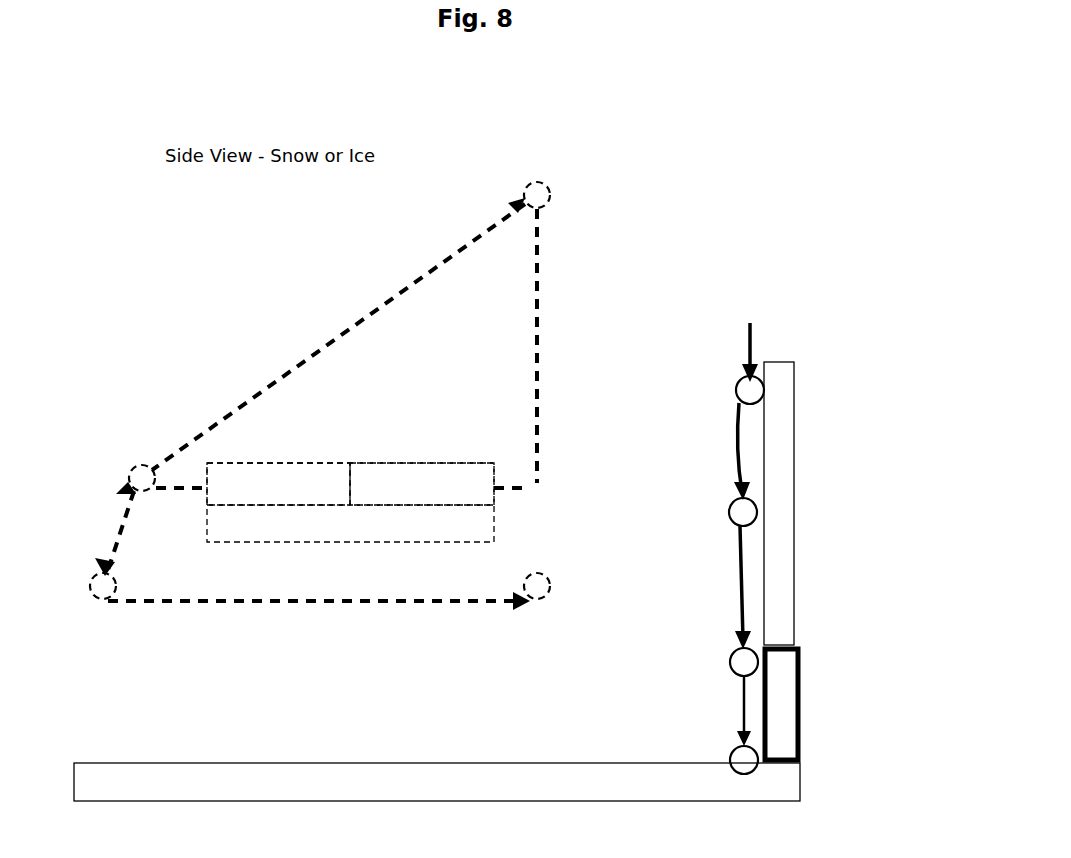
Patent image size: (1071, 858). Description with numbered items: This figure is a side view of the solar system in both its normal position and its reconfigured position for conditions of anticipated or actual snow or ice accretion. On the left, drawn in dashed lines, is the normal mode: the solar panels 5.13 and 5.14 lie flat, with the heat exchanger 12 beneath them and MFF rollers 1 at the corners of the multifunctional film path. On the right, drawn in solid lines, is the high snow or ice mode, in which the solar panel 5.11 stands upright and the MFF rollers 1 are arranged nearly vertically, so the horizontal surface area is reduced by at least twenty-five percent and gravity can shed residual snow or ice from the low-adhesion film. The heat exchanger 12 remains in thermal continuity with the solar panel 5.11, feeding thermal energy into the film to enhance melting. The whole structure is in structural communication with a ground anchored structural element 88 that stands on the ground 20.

The MFF rollers 1 is at (427, 478).
The heat exchanger 12 is at (507, 427).
The solar panel 5.13 is at (278, 484).
The solar panel 5.14 is at (422, 484).
The solar panel 5.11 is at (779, 503).
The ground anchored structural element 88 is at (781, 704).
The ground 20 is at (437, 782).